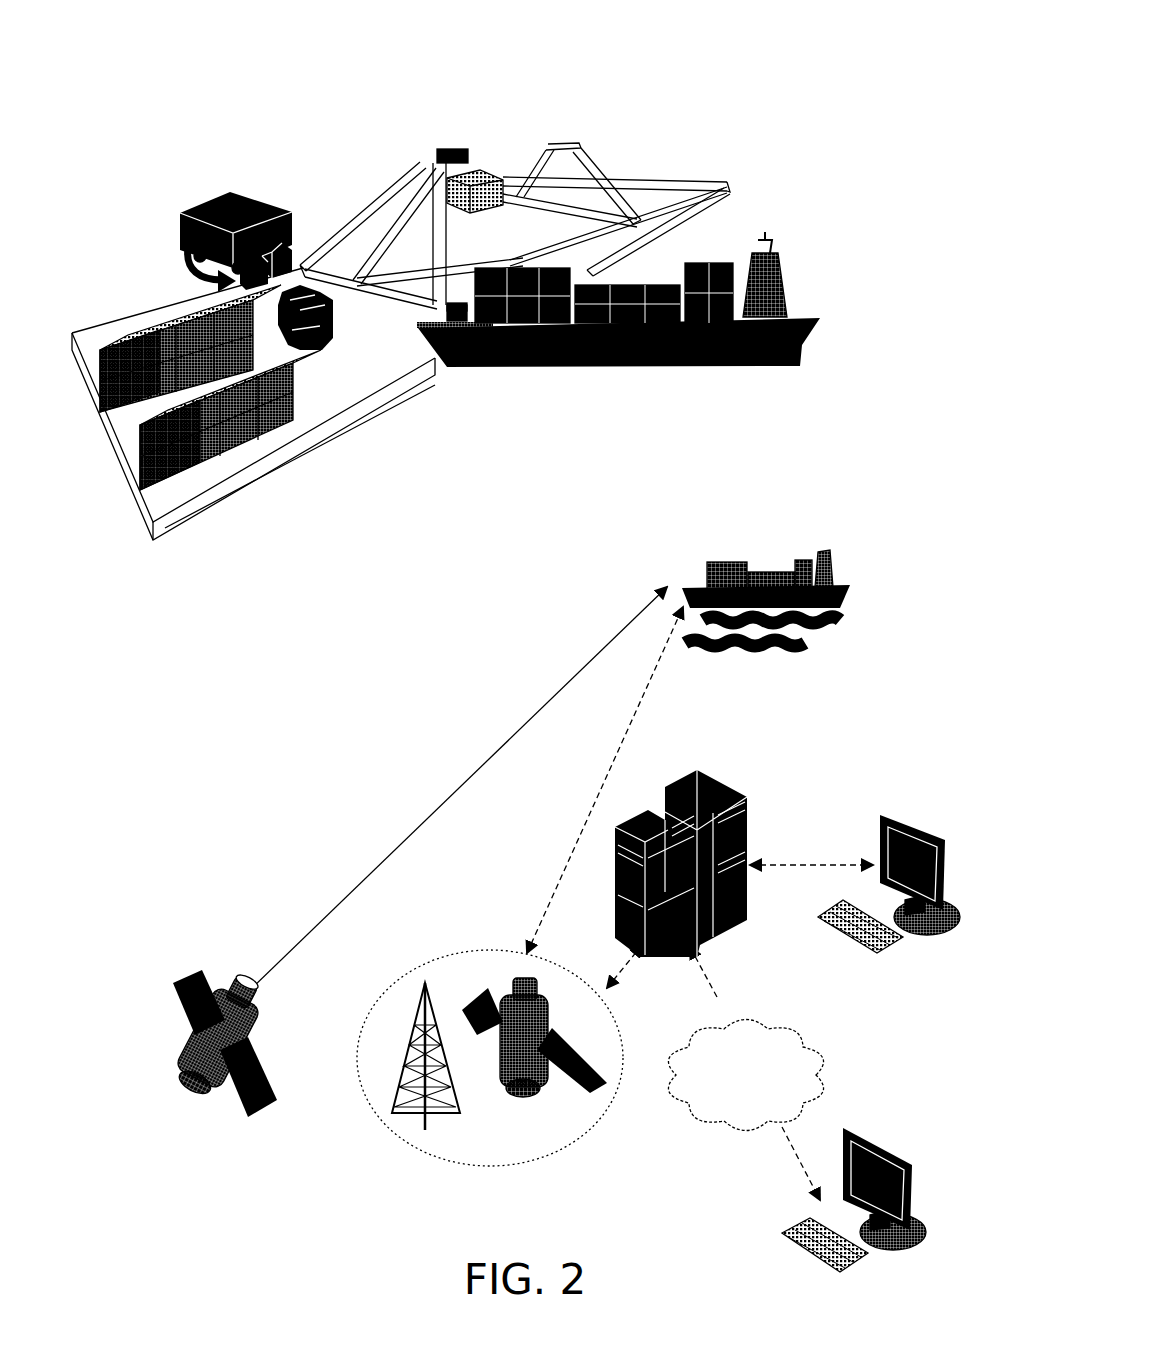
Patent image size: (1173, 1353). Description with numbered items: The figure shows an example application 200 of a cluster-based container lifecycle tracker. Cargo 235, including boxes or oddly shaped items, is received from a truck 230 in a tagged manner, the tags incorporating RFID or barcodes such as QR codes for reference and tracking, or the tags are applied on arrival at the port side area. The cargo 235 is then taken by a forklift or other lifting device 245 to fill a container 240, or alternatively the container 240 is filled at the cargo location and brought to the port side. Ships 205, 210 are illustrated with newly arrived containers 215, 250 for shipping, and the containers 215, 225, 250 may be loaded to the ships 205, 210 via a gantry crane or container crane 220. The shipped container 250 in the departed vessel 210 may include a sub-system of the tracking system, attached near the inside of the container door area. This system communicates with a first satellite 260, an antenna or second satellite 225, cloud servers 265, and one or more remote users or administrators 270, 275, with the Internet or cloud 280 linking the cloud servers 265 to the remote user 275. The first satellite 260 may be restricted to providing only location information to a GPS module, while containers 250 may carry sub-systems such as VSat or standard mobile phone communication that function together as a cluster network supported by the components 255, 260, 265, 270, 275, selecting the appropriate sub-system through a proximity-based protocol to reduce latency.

The example application 200 is at (933, 105).
The ship 205 is at (805, 355).
The departed vessel 210 is at (858, 600).
The containers 215 is at (705, 262).
The gantry crane 220 is at (642, 130).
The antenna or second satellite 225 is at (538, 128).
The truck 230 is at (225, 192).
The cargo 235 is at (180, 212).
The container 240 is at (187, 323).
The forklift or other lifting devices 245 is at (280, 313).
The container 250 is at (703, 558).
The component 255 is at (405, 975).
The first satellite 260 is at (205, 990).
The cloud servers 265 is at (728, 785).
The remote user or administrator 270 is at (968, 912).
The remote user or administrator 275 is at (893, 1160).
The internet/cloud 280 is at (745, 1075).